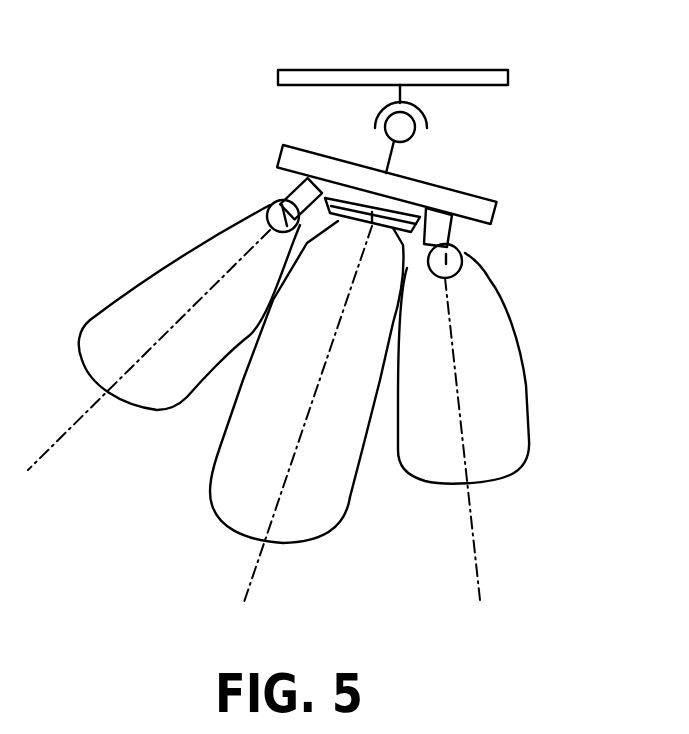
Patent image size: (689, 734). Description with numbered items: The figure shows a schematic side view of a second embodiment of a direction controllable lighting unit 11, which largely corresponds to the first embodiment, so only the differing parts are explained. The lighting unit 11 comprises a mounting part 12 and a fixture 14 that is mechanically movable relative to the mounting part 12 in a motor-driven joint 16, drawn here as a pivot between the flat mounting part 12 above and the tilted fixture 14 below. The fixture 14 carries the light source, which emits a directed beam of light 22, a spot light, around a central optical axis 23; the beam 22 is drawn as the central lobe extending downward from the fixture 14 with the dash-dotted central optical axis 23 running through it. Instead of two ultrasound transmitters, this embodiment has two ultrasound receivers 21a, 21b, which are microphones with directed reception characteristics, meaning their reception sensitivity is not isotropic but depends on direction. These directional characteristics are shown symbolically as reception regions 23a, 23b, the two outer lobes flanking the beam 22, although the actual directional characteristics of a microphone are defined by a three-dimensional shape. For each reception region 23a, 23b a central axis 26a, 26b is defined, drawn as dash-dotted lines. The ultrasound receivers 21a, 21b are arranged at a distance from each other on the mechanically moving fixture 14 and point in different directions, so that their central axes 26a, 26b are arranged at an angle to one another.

The lighting unit 11 is at (175, 67).
The mounting part 12 is at (508, 77).
The fixture 14 is at (308, 152).
The motor-driven joint 16 is at (415, 131).
The ultrasound receiver 21a is at (293, 192).
The ultrasound receiver 21b is at (452, 242).
The directed beam of light 22 is at (315, 370).
The central optical axis 23 is at (250, 588).
The reception region 23a is at (146, 347).
The reception region 23b is at (456, 452).
The central axis 26a is at (57, 438).
The central axis 26b is at (478, 572).